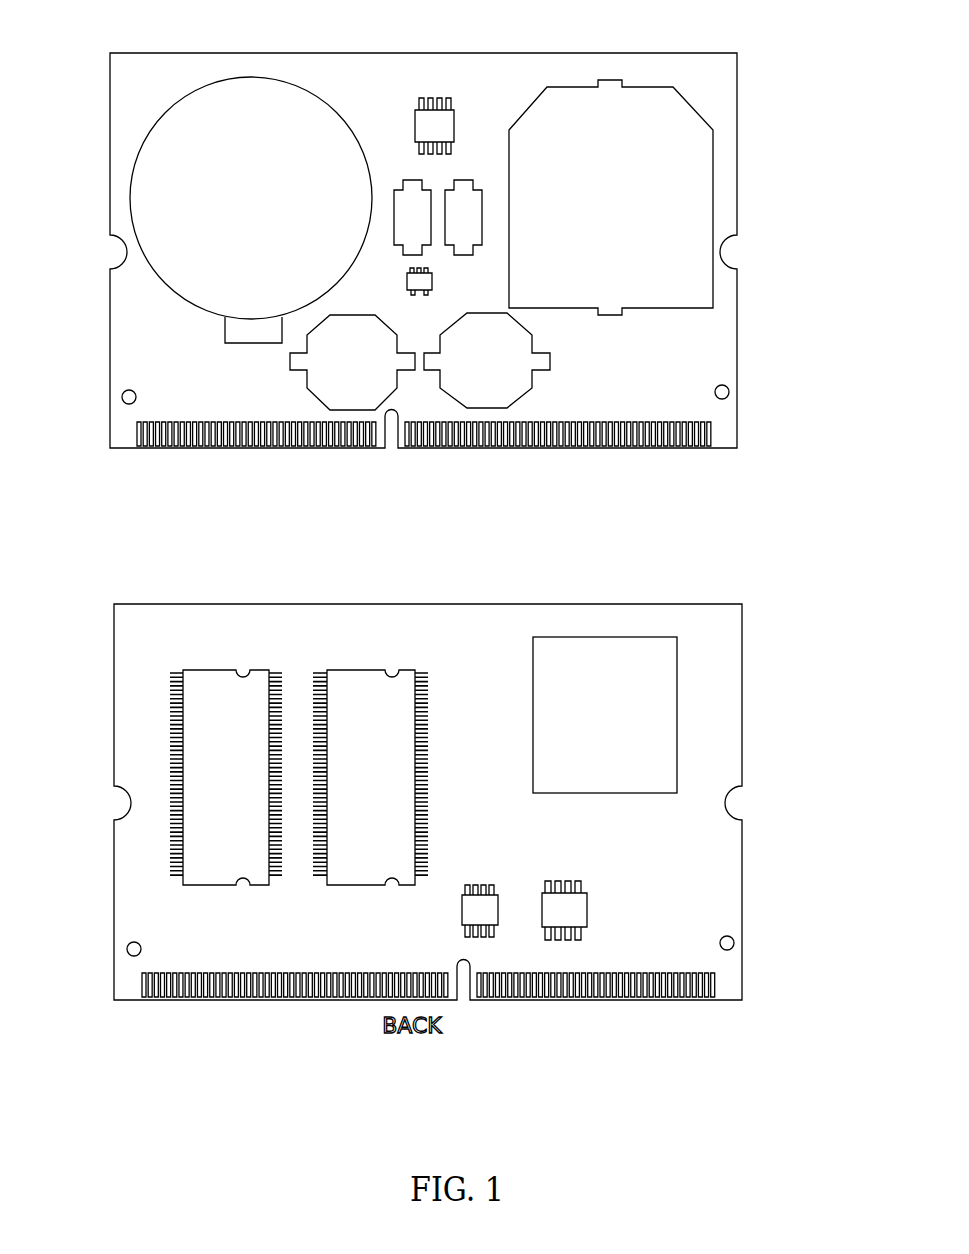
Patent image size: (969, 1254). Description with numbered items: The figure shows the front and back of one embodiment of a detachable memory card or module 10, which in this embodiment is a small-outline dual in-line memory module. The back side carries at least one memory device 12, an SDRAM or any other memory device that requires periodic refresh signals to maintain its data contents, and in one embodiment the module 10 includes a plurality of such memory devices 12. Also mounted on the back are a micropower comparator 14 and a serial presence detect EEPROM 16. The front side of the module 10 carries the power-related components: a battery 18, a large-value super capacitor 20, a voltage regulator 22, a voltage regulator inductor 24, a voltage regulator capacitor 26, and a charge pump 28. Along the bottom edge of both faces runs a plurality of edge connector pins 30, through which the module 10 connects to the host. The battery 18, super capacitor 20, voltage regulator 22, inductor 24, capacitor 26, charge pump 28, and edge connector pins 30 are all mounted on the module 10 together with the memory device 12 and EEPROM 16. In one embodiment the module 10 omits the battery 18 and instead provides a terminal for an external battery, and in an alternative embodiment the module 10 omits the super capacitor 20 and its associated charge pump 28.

The memory module 10 is at (775, 173).
The memory device 12 is at (380, 698).
The micropower comparator 14 is at (493, 910).
The serial presence detect EEPROM 16 is at (573, 908).
The battery 18 is at (298, 117).
The super capacitor 20 is at (676, 133).
The voltage regulator 22 is at (432, 280).
The voltage regulator inductor 24 is at (330, 390).
The voltage regulator capacitor 26 is at (404, 205).
The charge pump 28 is at (443, 126).
The edge connector pins 30 is at (173, 468).